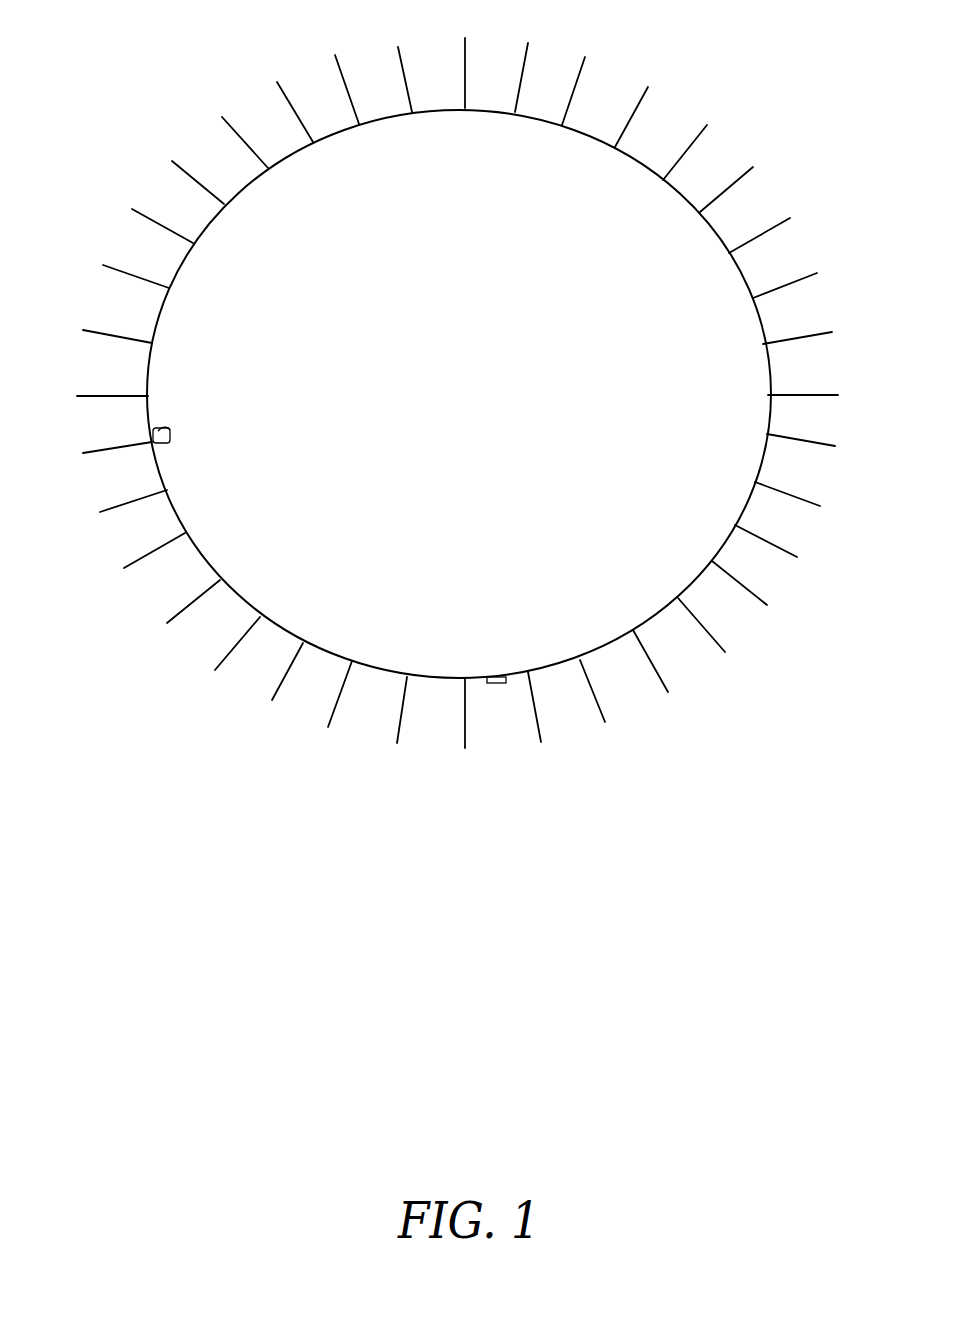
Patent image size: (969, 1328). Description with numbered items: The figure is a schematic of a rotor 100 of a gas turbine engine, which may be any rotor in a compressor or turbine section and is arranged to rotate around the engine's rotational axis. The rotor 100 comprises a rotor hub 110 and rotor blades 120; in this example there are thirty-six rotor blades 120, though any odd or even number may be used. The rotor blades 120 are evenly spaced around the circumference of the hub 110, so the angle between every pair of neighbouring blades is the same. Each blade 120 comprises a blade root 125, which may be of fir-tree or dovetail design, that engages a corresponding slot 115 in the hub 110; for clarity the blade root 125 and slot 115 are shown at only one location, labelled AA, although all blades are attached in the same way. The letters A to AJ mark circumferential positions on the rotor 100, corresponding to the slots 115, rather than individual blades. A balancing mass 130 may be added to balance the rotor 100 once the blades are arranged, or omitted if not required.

The rotor 100 is at (698, 743).
The rotor hub 110 is at (707, 233).
The rotor blades 120 is at (777, 227).
The slot 115 is at (173, 436).
The blade root 125 is at (171, 427).
The balancing mass 130 is at (496, 683).